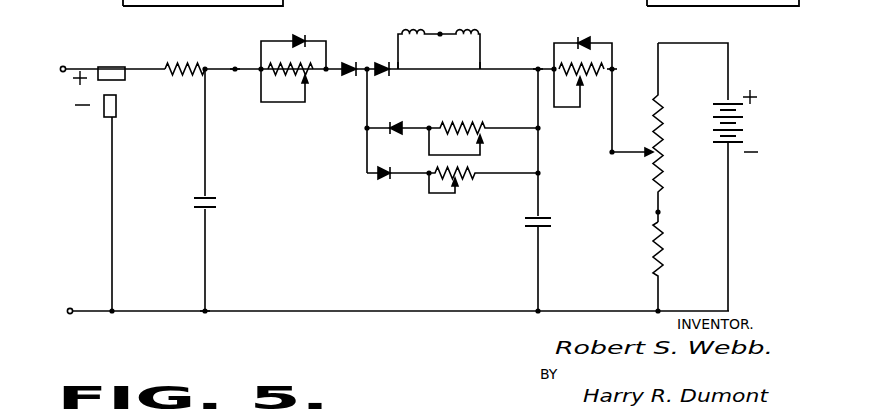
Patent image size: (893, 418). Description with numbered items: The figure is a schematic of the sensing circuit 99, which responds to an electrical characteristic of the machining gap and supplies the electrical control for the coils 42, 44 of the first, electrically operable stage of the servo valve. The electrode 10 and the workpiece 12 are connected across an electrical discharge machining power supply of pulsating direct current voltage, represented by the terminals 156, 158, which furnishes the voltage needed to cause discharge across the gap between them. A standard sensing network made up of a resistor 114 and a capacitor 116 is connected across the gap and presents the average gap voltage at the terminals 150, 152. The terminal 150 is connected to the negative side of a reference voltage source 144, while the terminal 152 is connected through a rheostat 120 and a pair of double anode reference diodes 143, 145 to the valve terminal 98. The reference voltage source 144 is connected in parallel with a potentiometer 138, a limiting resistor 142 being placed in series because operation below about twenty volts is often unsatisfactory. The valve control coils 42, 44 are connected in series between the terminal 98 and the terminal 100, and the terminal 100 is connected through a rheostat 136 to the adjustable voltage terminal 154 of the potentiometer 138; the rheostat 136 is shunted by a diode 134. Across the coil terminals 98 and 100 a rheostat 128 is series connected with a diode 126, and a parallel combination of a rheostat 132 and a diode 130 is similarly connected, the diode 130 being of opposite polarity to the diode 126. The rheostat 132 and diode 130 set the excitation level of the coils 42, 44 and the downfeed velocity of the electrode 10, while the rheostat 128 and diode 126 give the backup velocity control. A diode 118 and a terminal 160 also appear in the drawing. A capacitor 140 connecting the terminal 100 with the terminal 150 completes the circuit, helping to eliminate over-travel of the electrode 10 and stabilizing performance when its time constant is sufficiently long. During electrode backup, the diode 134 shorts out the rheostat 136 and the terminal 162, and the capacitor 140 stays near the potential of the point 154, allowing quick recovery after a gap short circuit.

The electrode 10 is at (116, 106).
The workpiece 12 is at (114, 66).
The valve control coil 42 is at (413, 32).
The valve control coil 44 is at (468, 32).
The valve terminal 98 is at (398, 70).
The sensing circuit 99 is at (392, 338).
The valve terminal 100 is at (479, 71).
The resistor 114 is at (173, 64).
The capacitor 116 is at (216, 200).
The diode 118 is at (300, 38).
The rheostat 120 is at (319, 73).
The diode 126 is at (396, 124).
The rheostat 128 is at (460, 126).
The diode 130 is at (381, 179).
The rheostat 132 is at (469, 180).
The diode 134 is at (584, 41).
The rheostat 136 is at (590, 87).
The potentiometer 138 is at (663, 112).
The capacitor 140 is at (551, 219).
The limiting resistor 142 is at (663, 248).
The double anode reference diode 143 is at (347, 60).
The reference voltage source 144 is at (730, 99).
The double anode reference diode 145 is at (382, 60).
The terminal 150 is at (205, 313).
The terminal 152 is at (233, 72).
The adjustable voltage terminal 154 is at (612, 155).
The power supply terminal 156 is at (69, 314).
The power supply terminal 158 is at (64, 65).
The junction 160 is at (613, 70).
The terminal 162 is at (538, 66).